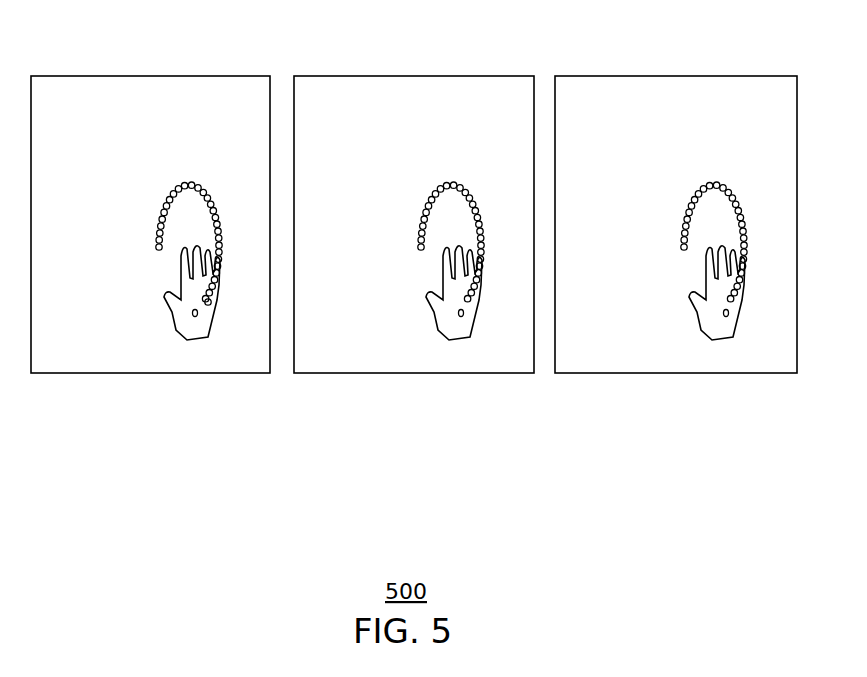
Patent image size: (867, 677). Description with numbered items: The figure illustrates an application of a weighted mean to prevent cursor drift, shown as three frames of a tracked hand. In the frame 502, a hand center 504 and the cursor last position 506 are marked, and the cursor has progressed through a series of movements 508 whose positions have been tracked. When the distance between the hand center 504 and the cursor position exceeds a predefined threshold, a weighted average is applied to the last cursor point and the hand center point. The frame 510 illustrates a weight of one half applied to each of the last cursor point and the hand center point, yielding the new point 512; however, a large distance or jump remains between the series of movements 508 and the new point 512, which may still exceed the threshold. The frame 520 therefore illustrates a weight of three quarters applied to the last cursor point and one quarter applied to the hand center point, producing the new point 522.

The frame 502 is at (117, 58).
The hand center 504 is at (190, 315).
The cursor last position 506 is at (208, 308).
The series of movements 508 is at (197, 172).
The frame 510 is at (387, 58).
The new point 512 is at (452, 320).
The frame 520 is at (628, 58).
The new point 522 is at (717, 322).